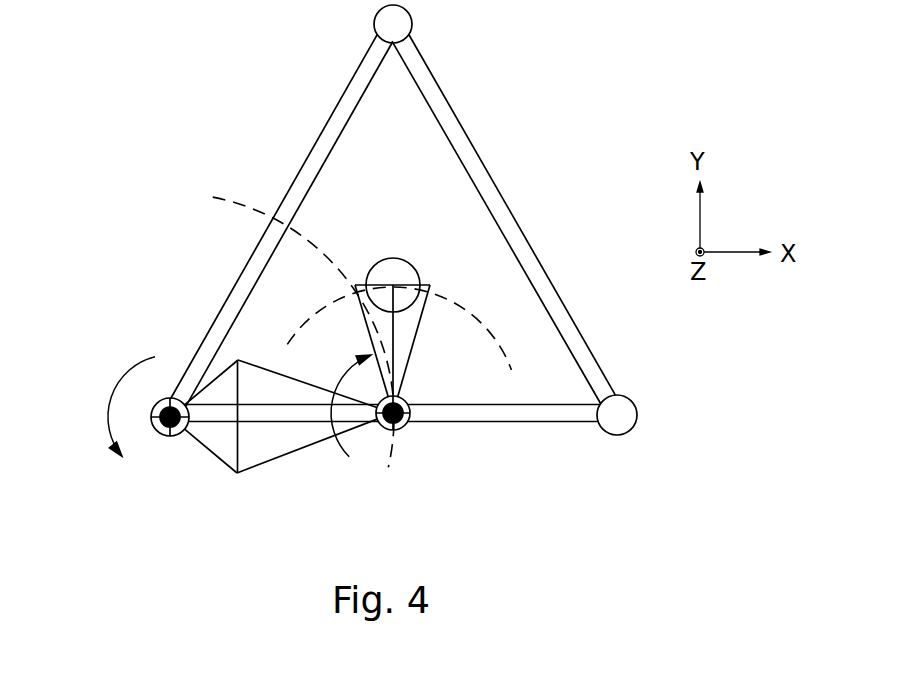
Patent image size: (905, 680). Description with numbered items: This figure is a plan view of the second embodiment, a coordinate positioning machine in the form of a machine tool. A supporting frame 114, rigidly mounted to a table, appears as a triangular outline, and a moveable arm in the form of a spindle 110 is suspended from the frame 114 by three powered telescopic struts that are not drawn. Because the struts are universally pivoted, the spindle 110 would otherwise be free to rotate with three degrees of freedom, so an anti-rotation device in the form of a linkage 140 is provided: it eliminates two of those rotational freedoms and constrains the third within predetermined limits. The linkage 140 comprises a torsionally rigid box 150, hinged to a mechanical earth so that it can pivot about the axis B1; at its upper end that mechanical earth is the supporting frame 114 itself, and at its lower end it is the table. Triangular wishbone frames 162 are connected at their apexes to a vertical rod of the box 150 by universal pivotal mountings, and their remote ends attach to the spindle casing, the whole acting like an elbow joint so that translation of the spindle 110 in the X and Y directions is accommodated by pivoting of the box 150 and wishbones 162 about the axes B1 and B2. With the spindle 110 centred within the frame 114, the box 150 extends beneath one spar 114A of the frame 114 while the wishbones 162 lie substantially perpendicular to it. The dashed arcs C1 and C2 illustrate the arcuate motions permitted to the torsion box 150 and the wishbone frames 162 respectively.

The supporting frame 114 is at (422, 220).
The spar 114A is at (467, 137).
The spindle 110 is at (403, 257).
The wishbone frame 162 is at (415, 343).
The torsionally rigid box 150 is at (245, 472).
The linkage 140 is at (190, 471).
The axis B1 is at (167, 398).
The second pivot axis B2 is at (401, 428).
The arcuate motion of torsion box C1 is at (245, 208).
The arcuate motion of wishbone frames C2 is at (491, 329).